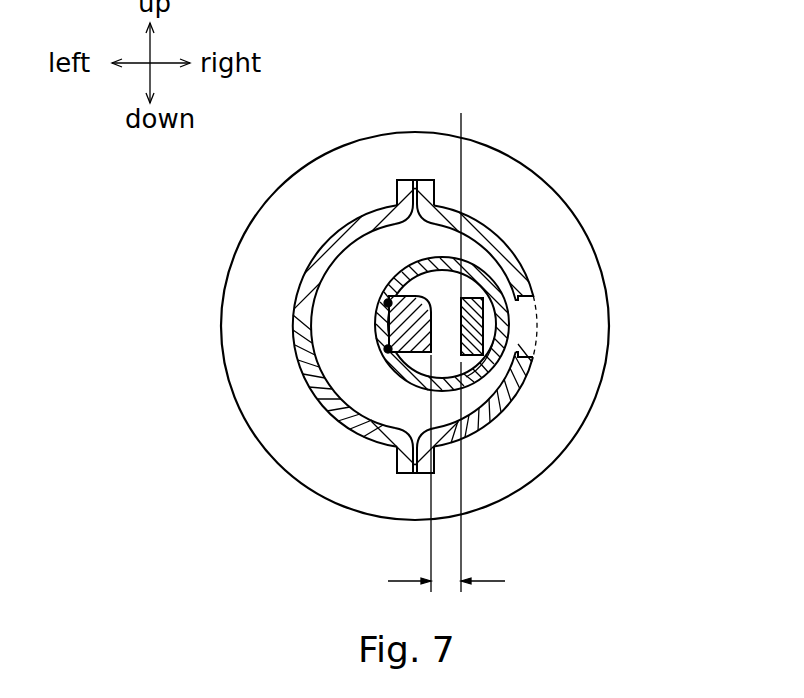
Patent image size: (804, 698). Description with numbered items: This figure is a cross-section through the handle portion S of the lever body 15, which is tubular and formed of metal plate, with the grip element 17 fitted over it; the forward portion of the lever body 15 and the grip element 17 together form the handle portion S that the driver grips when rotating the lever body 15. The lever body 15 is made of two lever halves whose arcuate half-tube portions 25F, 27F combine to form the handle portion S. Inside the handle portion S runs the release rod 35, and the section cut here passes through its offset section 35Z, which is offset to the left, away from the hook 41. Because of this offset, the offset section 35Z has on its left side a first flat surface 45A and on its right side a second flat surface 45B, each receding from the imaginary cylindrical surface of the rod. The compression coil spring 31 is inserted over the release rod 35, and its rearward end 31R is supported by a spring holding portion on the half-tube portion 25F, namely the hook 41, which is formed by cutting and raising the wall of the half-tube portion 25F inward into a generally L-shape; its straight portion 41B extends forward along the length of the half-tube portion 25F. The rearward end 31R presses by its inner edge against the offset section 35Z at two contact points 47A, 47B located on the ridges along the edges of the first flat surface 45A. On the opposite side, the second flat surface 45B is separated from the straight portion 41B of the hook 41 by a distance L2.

The lever body 15 is at (379, 284).
The grip element 17 is at (352, 176).
The half-tube portion 25F is at (507, 252).
The half-tube portion 27F is at (328, 250).
The compression coil spring 31 is at (488, 381).
The rearward end of the compression coil spring 31R is at (468, 387).
The release rod 35 is at (413, 294).
The offset section 35Z is at (405, 358).
The hook 41 is at (485, 316).
The straight portion 41B is at (472, 333).
The first flat surface 45A is at (386, 320).
The second flat surface 45B is at (468, 340).
The contact point 47A is at (386, 302).
The contact point 47B is at (386, 350).
The handle portion S is at (418, 85).
The distance L2 is at (446, 565).